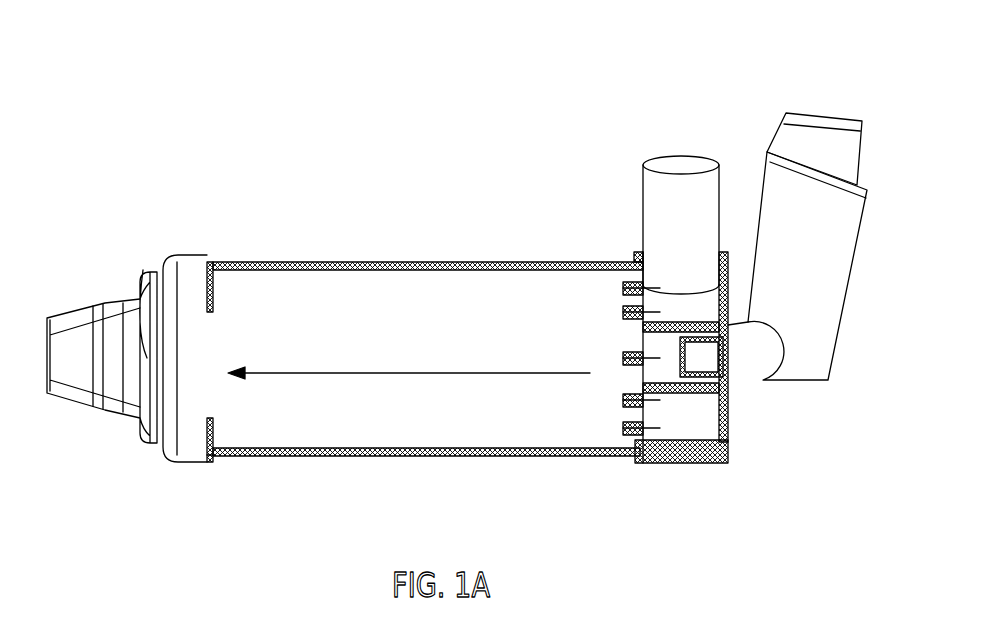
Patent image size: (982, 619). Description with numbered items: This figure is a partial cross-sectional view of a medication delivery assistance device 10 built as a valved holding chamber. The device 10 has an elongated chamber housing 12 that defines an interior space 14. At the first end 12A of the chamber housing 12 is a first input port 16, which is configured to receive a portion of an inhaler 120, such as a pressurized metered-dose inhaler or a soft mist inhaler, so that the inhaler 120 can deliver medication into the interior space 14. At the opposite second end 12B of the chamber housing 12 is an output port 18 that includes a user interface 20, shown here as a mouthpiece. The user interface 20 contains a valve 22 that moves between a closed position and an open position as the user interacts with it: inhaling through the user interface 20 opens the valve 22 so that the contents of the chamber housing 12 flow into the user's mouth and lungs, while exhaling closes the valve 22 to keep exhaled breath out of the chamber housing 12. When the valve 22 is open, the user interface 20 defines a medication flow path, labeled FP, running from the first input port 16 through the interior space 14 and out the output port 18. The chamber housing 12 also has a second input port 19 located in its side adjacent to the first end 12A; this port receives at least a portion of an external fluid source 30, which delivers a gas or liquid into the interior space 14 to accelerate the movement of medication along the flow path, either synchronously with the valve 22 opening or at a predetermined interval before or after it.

The medication delivery assistance device 10 is at (216, 26).
The chamber housing 12 is at (370, 264).
The first end 12A is at (732, 448).
The second end 12B is at (210, 463).
The interior space 14 is at (478, 307).
The first input port 16 is at (730, 400).
The output port 18 is at (214, 310).
The second input port 19 is at (640, 275).
The user interface 20 is at (66, 316).
The valve 22 is at (143, 270).
The external fluid source 30 is at (655, 186).
The inhaler 120 is at (808, 150).